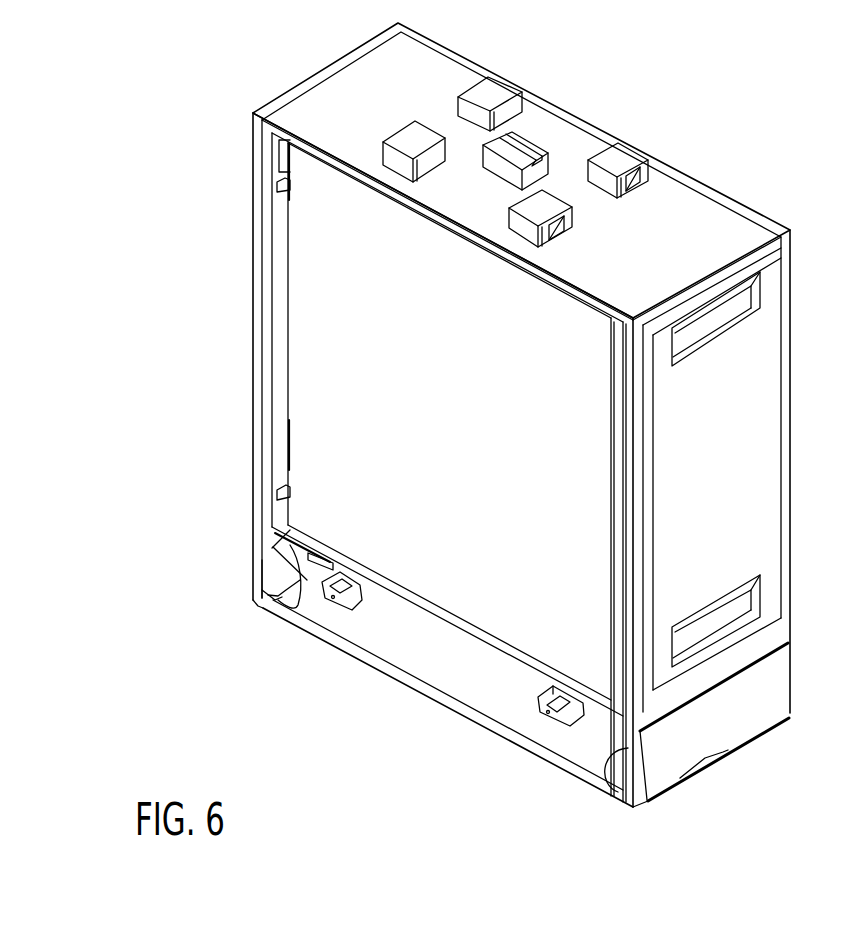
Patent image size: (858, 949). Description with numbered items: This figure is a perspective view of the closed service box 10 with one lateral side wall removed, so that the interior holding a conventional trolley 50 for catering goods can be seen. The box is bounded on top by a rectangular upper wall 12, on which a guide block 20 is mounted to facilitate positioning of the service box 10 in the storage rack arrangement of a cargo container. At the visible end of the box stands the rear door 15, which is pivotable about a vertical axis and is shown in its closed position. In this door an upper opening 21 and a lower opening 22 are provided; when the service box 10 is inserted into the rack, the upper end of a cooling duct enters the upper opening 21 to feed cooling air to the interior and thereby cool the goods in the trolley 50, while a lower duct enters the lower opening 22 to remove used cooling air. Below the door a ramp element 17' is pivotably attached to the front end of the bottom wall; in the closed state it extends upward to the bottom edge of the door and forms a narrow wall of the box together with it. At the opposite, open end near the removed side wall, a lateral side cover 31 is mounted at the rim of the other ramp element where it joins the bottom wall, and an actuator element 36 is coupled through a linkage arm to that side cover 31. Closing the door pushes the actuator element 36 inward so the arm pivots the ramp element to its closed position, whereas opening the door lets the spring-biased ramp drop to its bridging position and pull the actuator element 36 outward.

The service box 10 is at (182, 242).
The upper wall 12 is at (705, 200).
The rear door 15 is at (752, 459).
The ramp element 17' is at (729, 725).
The guide block 20 is at (533, 140).
The upper opening 21 is at (717, 318).
The lower opening 22 is at (737, 608).
The side cover 31 is at (262, 608).
The actuator element 36 is at (300, 548).
The trolley 50 is at (425, 590).